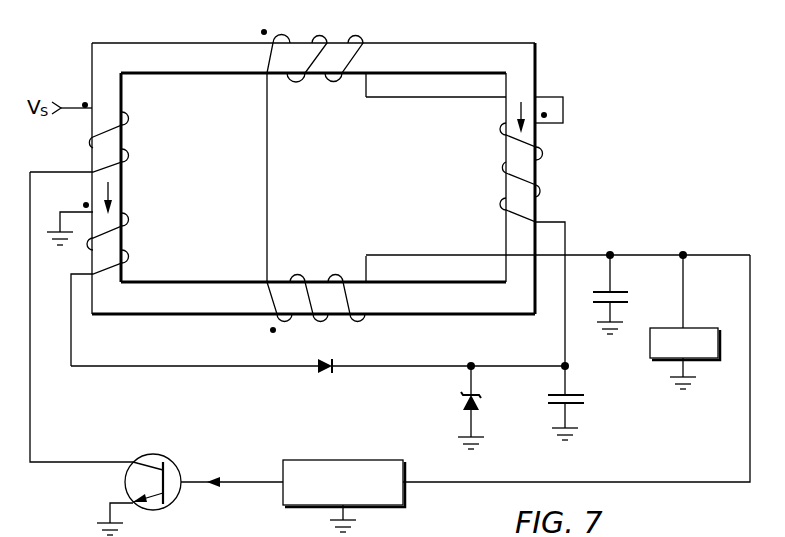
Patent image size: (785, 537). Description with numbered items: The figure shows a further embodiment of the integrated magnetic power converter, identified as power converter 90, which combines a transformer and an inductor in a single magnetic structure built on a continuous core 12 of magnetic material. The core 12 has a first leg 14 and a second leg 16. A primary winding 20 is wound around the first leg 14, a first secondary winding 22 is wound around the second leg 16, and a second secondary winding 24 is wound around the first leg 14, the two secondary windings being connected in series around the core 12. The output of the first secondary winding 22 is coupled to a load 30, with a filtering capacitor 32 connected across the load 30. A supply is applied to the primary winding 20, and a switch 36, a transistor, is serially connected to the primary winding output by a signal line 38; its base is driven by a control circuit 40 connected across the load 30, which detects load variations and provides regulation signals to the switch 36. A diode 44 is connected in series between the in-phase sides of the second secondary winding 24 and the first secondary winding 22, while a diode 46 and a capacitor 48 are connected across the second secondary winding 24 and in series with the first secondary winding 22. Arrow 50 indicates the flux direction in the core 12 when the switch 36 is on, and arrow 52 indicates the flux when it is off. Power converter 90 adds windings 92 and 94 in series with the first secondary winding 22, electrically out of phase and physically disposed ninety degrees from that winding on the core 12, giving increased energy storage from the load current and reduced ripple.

The core 12 is at (443, 53).
The first leg 14 is at (110, 77).
The second leg 16 is at (517, 233).
The primary winding 20 is at (128, 154).
The first secondary winding 22 is at (500, 166).
The second secondary winding 24 is at (128, 224).
The load 30 is at (700, 328).
The filtering capacitor 32 is at (621, 293).
The switch 36 is at (170, 460).
The signal line 38 is at (31, 412).
The control circuit 40 is at (354, 460).
The diode 44 is at (324, 374).
The diode 46 is at (463, 400).
The capacitor 48 is at (585, 395).
The arrow 50 is at (519, 106).
The arrow 52 is at (108, 193).
The power converter 90 is at (562, 73).
The winding 92 is at (318, 36).
The winding 94 is at (297, 278).